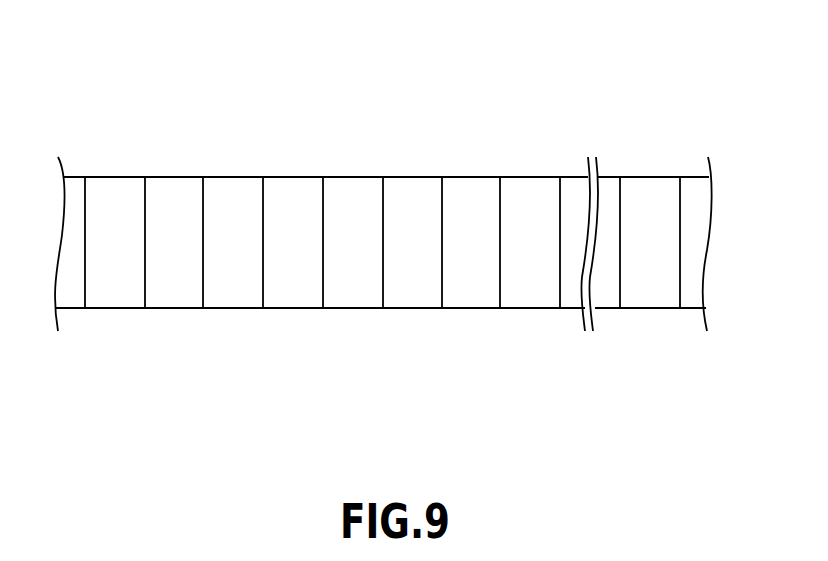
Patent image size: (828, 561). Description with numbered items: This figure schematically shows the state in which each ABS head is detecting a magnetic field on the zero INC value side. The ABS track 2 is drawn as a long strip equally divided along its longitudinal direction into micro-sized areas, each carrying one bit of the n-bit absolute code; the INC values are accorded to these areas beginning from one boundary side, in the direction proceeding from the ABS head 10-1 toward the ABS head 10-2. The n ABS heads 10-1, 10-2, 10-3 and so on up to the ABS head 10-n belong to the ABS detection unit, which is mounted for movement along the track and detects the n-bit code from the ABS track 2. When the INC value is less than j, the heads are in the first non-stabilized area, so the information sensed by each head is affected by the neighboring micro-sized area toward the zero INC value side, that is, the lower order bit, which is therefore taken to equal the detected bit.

The ABS track 2 is at (542, 176).
The ABS head 10-1 is at (95, 148).
The ABS head 10-2 is at (273, 148).
The ABS head 10-3 is at (452, 148).
The ABS head 10-n is at (630, 148).